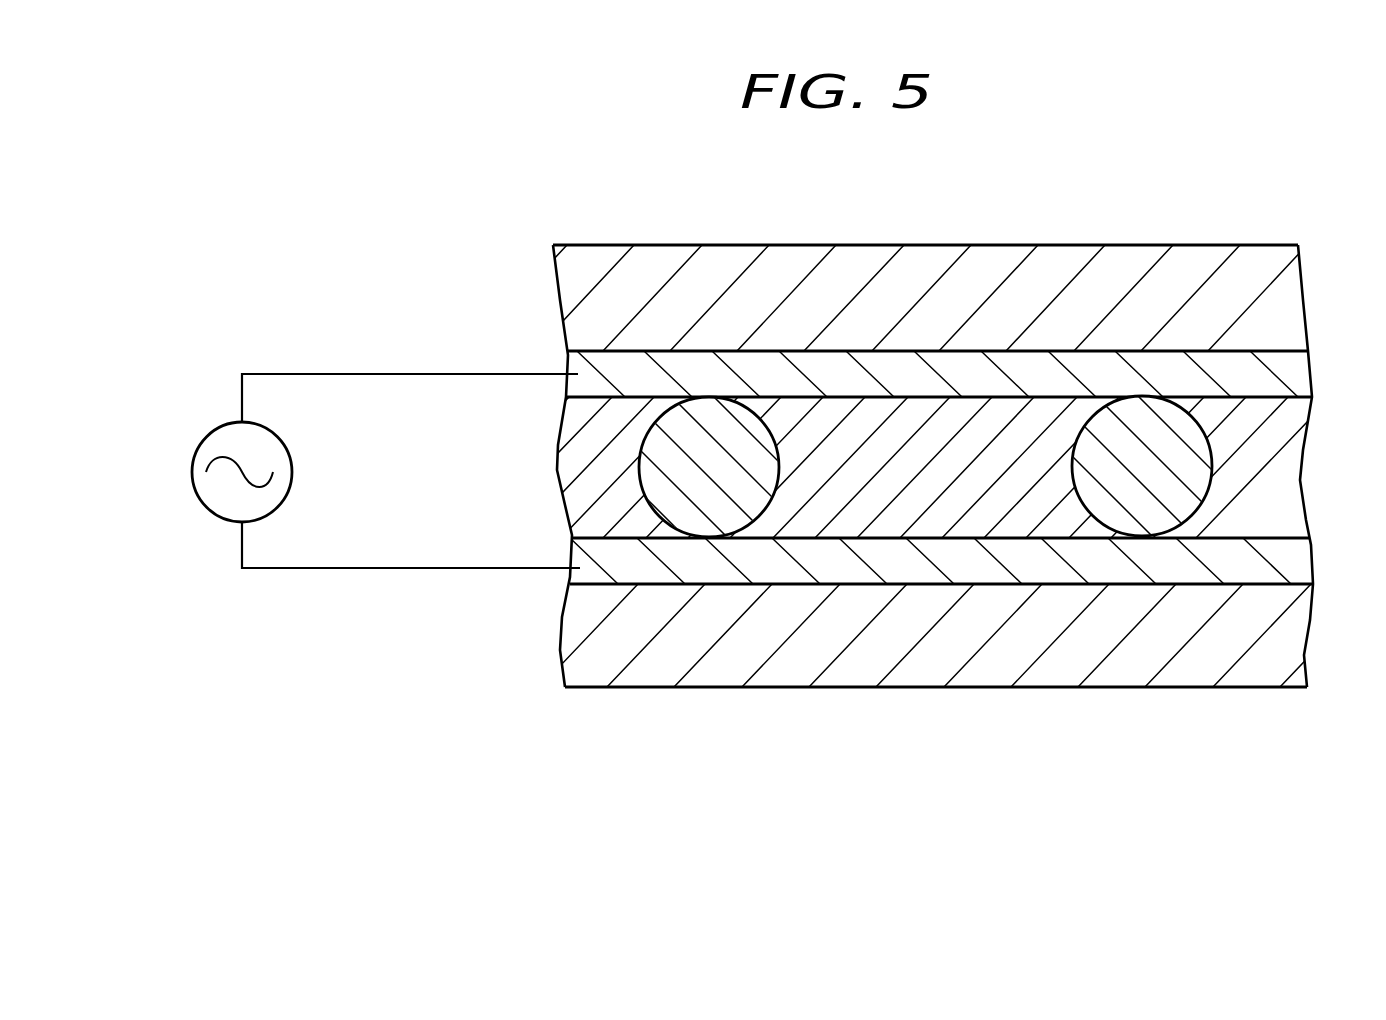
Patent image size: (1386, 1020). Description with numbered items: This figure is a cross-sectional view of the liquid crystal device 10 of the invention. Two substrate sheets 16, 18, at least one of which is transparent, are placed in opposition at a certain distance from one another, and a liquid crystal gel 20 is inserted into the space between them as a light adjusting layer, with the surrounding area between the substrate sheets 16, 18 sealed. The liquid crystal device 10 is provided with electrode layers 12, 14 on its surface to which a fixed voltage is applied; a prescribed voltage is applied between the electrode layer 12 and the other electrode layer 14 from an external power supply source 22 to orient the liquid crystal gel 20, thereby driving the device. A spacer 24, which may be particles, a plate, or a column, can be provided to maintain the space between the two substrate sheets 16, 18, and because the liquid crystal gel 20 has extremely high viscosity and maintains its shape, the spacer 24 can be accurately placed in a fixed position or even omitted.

The liquid crystal device 10 is at (1238, 222).
The electrode layer 12 is at (1282, 372).
The electrode layer 14 is at (1282, 558).
The substrate sheet 16 is at (1280, 302).
The substrate sheet 18 is at (1283, 637).
The liquid crystal gel 20 is at (958, 485).
The external power supply source 22 is at (192, 472).
The spacer 24 is at (1183, 473).